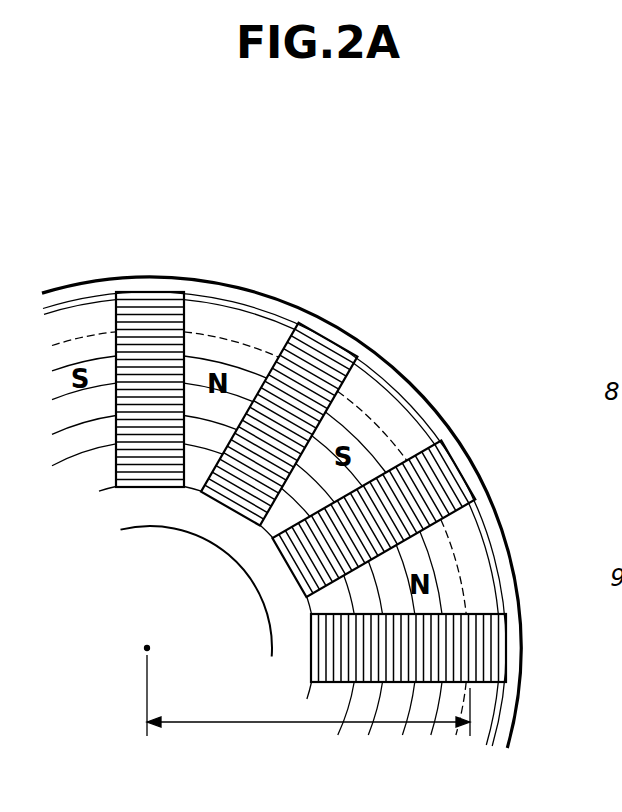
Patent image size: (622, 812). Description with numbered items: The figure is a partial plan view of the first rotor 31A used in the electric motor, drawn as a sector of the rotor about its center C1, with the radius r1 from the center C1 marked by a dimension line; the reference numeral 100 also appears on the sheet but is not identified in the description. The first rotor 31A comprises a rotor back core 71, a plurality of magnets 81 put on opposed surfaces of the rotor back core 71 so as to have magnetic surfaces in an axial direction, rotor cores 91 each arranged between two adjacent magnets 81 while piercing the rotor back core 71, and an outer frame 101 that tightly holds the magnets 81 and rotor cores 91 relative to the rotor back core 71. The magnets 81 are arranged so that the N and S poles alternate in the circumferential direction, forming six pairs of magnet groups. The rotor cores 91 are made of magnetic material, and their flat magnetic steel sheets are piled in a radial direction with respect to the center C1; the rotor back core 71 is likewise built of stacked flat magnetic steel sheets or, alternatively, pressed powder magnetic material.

The rotor 100 is at (318, 172).
The outer frame 101 is at (515, 627).
The magnets 81 is at (90, 318).
The rotor cores 91 is at (150, 300).
The rotor back core 71 is at (263, 628).
The first rotor 31A is at (392, 343).
The center C1 is at (143, 642).
The radius r1 is at (308, 707).